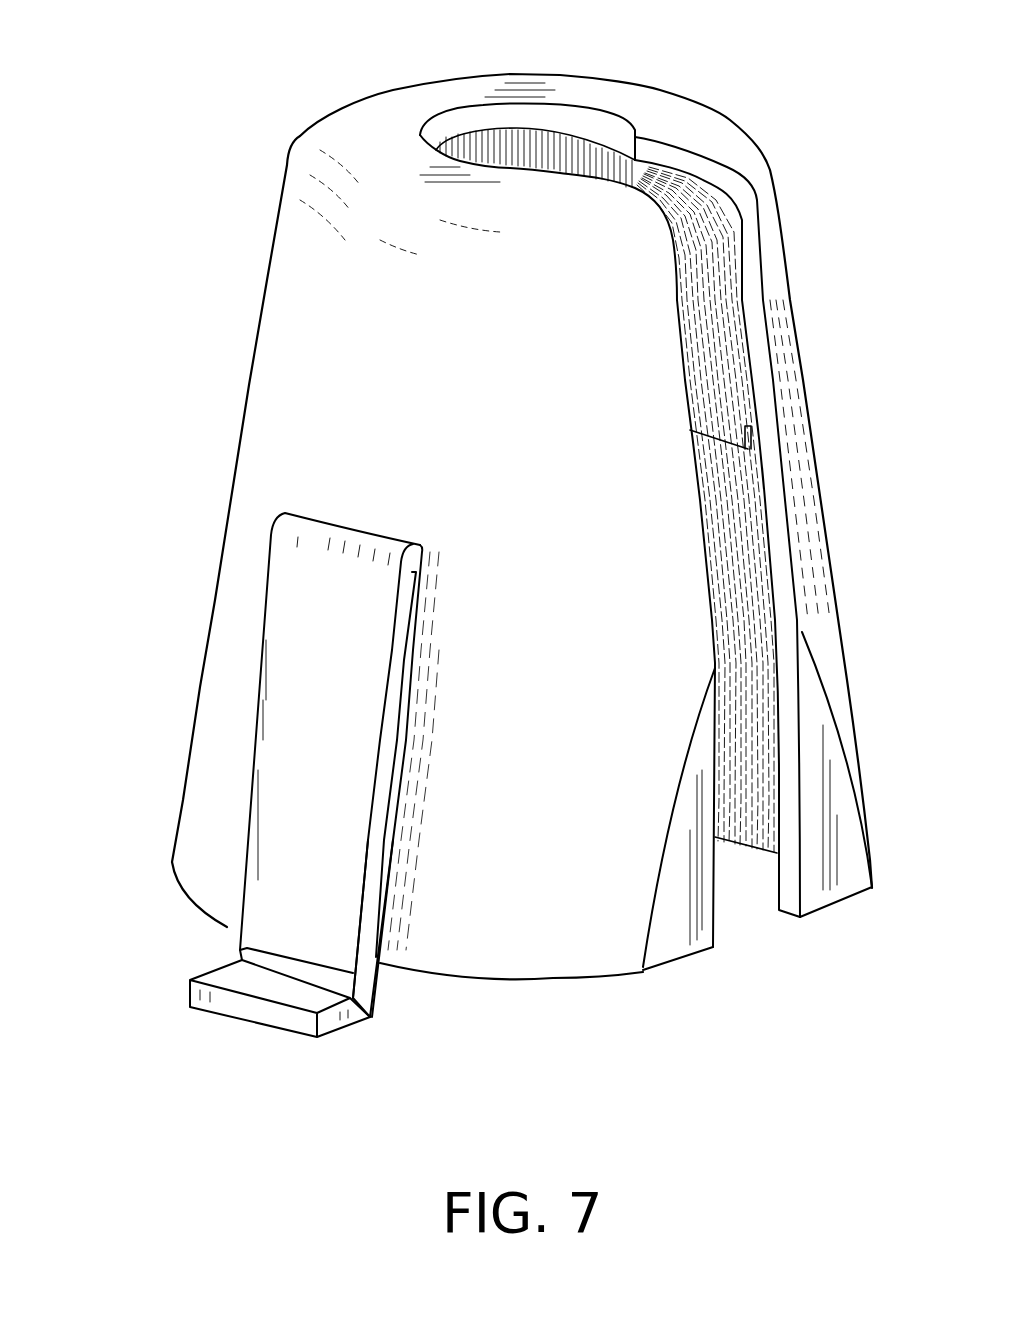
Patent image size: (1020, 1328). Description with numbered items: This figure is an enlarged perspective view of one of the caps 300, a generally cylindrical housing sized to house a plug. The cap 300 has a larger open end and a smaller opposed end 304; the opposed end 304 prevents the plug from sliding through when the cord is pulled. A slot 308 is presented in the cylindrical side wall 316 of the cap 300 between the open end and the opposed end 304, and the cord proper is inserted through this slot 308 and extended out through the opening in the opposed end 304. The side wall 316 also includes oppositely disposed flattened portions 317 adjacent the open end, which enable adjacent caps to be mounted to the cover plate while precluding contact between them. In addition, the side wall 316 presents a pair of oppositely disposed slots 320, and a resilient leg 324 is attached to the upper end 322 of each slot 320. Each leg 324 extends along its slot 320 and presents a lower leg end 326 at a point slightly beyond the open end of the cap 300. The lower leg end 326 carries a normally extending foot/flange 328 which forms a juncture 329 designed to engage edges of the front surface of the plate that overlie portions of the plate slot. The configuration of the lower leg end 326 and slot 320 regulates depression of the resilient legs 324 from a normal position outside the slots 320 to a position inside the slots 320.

The cap 300 is at (158, 98).
The opposed end 304 is at (375, 118).
The slot 308 is at (737, 870).
The side wall 316 is at (290, 398).
The flattened portion 317 is at (678, 932).
The slot 320 is at (378, 963).
The upper end 322 is at (345, 530).
The resilient leg 324 is at (330, 621).
The lower leg end 326 is at (351, 997).
The foot/flange 328 is at (255, 1008).
The juncture 329 is at (243, 952).